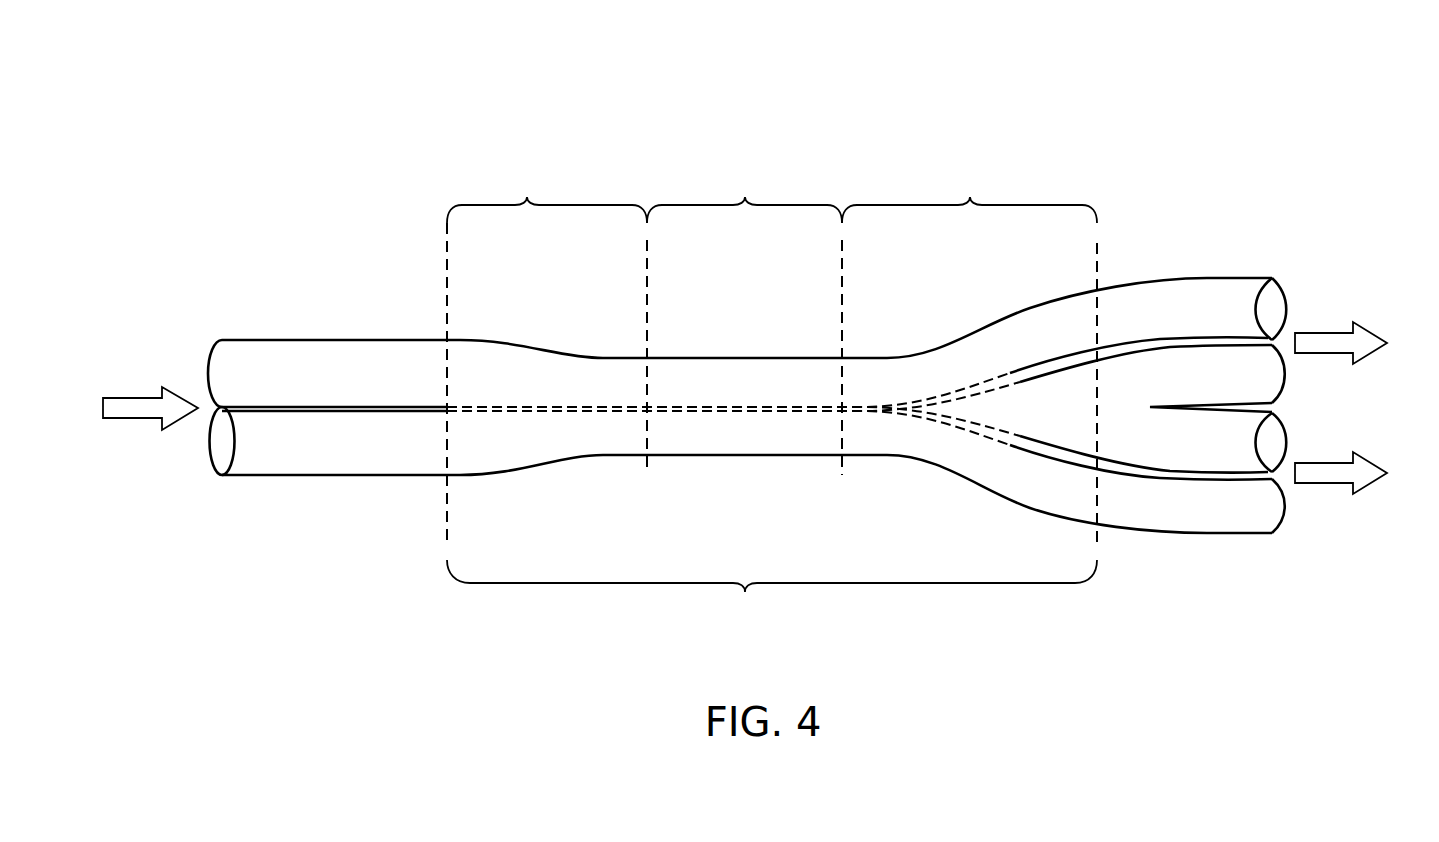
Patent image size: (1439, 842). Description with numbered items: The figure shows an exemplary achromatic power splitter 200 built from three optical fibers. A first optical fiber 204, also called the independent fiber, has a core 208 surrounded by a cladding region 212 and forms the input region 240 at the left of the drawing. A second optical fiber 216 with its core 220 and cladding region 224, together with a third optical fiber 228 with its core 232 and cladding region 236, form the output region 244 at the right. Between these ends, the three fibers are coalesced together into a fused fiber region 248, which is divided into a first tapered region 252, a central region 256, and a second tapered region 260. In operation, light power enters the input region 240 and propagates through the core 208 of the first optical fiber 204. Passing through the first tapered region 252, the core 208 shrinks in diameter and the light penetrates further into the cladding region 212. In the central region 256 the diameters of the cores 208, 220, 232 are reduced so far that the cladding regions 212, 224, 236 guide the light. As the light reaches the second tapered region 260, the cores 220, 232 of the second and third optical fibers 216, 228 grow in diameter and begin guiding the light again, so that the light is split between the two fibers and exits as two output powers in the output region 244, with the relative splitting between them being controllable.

The achromatic power splitter 200 is at (244, 206).
The first optical fiber 204 is at (222, 338).
The core 208 is at (312, 416).
The cladding region 212 is at (268, 360).
The second optical fiber 216 is at (1272, 278).
The core 220 is at (1200, 335).
The cladding region 224 is at (1136, 293).
The third optical fiber 228 is at (1272, 540).
The core 232 is at (1208, 482).
The cladding region 236 is at (1152, 517).
The input region 240 is at (185, 339).
The output region 244 is at (1351, 567).
The fused fiber region 248 is at (772, 595).
The first tapered region 252 is at (547, 355).
The central region 256 is at (745, 311).
The second tapered region 260 is at (827, 355).